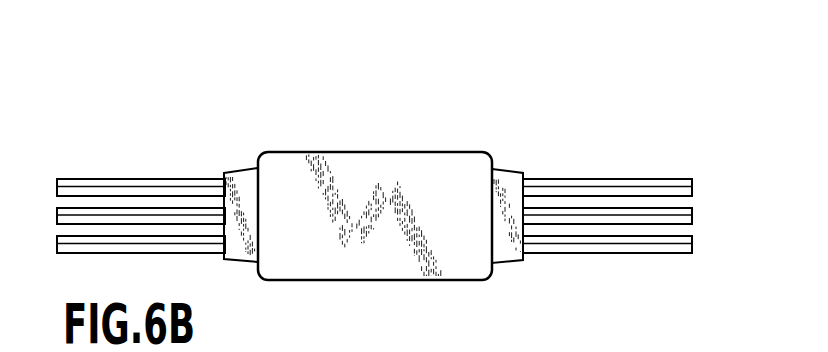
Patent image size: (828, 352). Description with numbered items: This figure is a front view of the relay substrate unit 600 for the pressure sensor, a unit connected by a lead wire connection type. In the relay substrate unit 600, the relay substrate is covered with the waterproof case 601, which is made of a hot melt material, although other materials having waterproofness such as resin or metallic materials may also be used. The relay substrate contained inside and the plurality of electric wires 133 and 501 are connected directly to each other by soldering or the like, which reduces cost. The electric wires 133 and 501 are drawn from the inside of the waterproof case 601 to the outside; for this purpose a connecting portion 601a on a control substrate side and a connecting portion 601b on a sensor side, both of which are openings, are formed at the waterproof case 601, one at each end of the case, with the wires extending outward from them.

The relay substrate unit 600 is at (375, 144).
The waterproof case 601 is at (403, 152).
The connecting portion on a control substrate side 601a is at (237, 176).
The connecting portion on a sensor side 601b is at (503, 179).
The electric wires 501 is at (149, 238).
The electric wires 133 is at (603, 242).